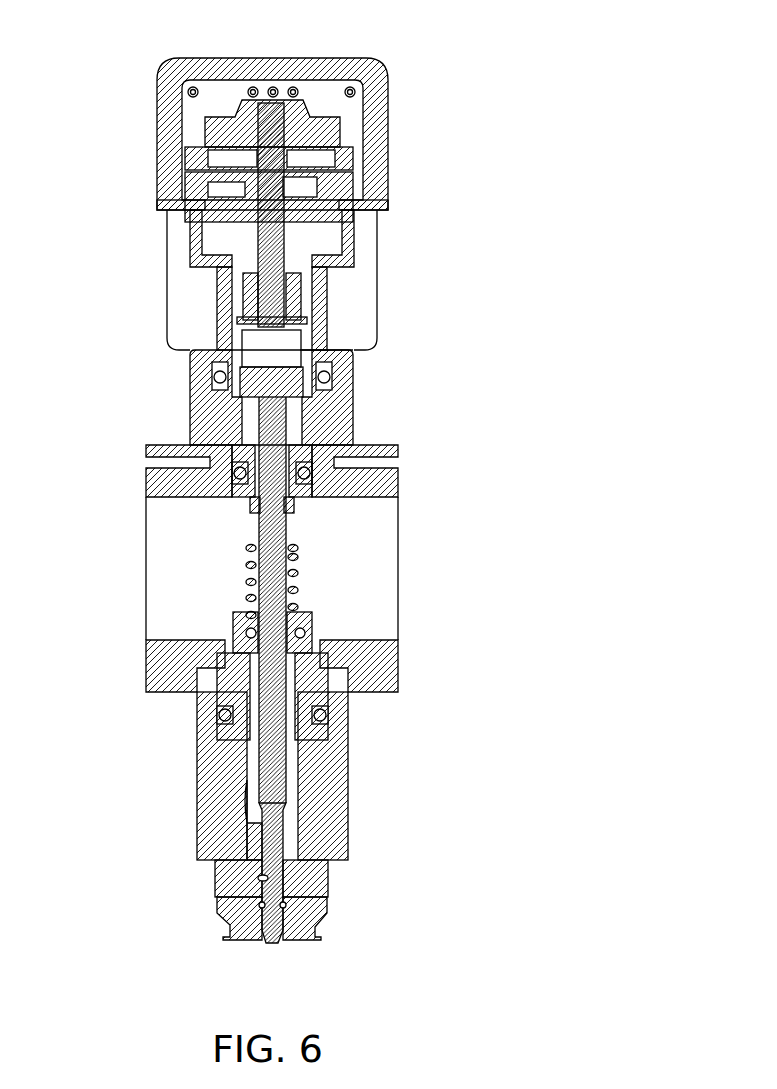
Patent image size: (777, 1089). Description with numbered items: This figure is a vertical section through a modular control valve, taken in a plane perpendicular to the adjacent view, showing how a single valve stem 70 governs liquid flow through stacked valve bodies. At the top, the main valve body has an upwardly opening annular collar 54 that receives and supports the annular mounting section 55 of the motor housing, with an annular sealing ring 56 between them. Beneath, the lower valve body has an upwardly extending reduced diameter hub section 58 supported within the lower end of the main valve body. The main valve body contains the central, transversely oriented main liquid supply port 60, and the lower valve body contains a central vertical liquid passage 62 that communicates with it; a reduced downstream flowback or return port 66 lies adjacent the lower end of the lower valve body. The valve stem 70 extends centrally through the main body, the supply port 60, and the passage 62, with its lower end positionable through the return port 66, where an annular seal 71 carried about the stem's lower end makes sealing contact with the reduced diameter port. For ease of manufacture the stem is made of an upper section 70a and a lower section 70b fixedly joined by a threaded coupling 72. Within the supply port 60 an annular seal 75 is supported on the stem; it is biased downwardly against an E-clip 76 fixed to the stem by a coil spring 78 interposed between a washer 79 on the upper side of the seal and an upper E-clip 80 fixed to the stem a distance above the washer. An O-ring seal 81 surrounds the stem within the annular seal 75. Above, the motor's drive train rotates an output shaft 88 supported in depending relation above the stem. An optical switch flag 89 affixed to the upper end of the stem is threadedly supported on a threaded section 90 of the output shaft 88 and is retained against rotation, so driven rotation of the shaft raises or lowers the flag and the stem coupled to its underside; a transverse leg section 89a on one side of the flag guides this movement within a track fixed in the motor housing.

The annular collar 54 is at (353, 397).
The annular mounting section 55 is at (214, 377).
The annular sealing ring 56 is at (353, 352).
The hub section 58 is at (318, 698).
The main liquid supply port 60 is at (157, 497).
The central vertical liquid passage 62 is at (250, 778).
The flowback or return port 66 is at (267, 878).
The valve stem 70 is at (287, 530).
The upper section of valve stem 70a is at (273, 470).
The lower section of valve stem 70b is at (280, 790).
The annular seal 71 is at (287, 903).
The threaded coupling 72 is at (258, 712).
The annular seal 75 is at (240, 633).
The E-clip 76 is at (290, 683).
The coil spring 78 is at (253, 567).
The washer 79 is at (298, 618).
The upper E-clip 80 is at (299, 548).
The O-ring seal 81 is at (310, 613).
The output shaft 88 is at (272, 122).
The optical switch flag 89 is at (340, 211).
The transverse leg section 89a is at (222, 193).
The threaded section 90 is at (260, 273).